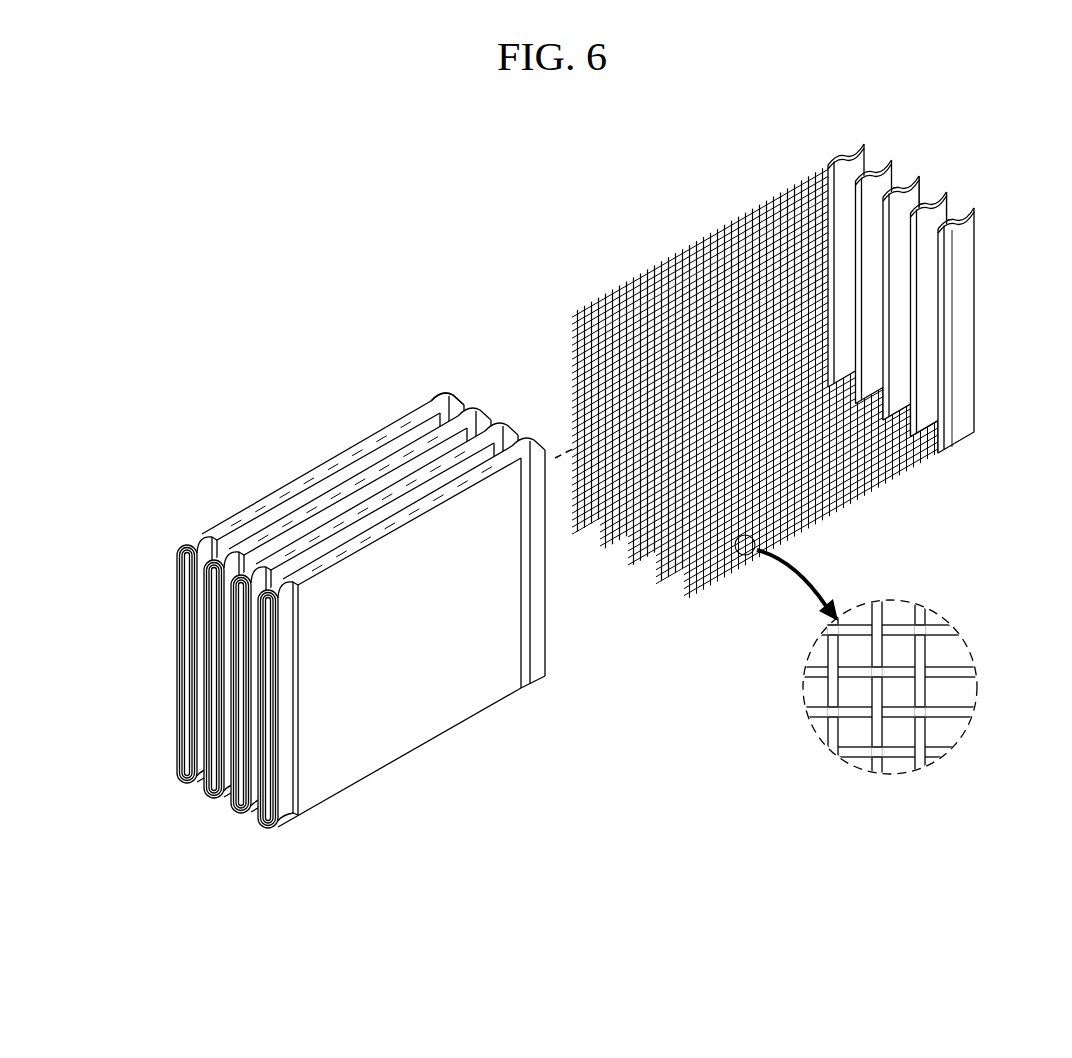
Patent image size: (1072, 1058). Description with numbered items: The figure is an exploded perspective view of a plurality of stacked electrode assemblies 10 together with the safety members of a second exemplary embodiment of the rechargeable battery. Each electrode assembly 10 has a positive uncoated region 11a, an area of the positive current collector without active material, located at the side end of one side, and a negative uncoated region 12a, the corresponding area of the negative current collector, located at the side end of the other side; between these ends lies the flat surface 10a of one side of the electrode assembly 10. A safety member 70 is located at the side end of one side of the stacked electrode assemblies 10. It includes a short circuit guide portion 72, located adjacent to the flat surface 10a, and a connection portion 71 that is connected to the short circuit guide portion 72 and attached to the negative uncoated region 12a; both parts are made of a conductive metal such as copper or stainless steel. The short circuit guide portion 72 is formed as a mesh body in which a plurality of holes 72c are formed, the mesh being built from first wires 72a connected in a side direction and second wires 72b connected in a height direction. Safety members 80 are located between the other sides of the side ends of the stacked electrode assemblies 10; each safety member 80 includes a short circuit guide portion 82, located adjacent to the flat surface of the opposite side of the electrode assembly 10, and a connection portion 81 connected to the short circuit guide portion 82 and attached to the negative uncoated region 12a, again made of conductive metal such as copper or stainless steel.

The electrode assembly 10 is at (383, 581).
The flat surface 10a is at (450, 707).
The positive uncoated region 11a is at (194, 541).
The negative uncoated region 12a is at (447, 394).
The safety member 70 is at (810, 434).
The connection portion 71 is at (966, 419).
The short circuit guide portion 72 is at (808, 459).
The first wires 72a is at (692, 601).
The second wires 72b is at (688, 588).
The holes 72c is at (929, 736).
The safety member 80 is at (820, 160).
The connection portion 81 is at (868, 163).
The short circuit guide portion 82 is at (763, 204).